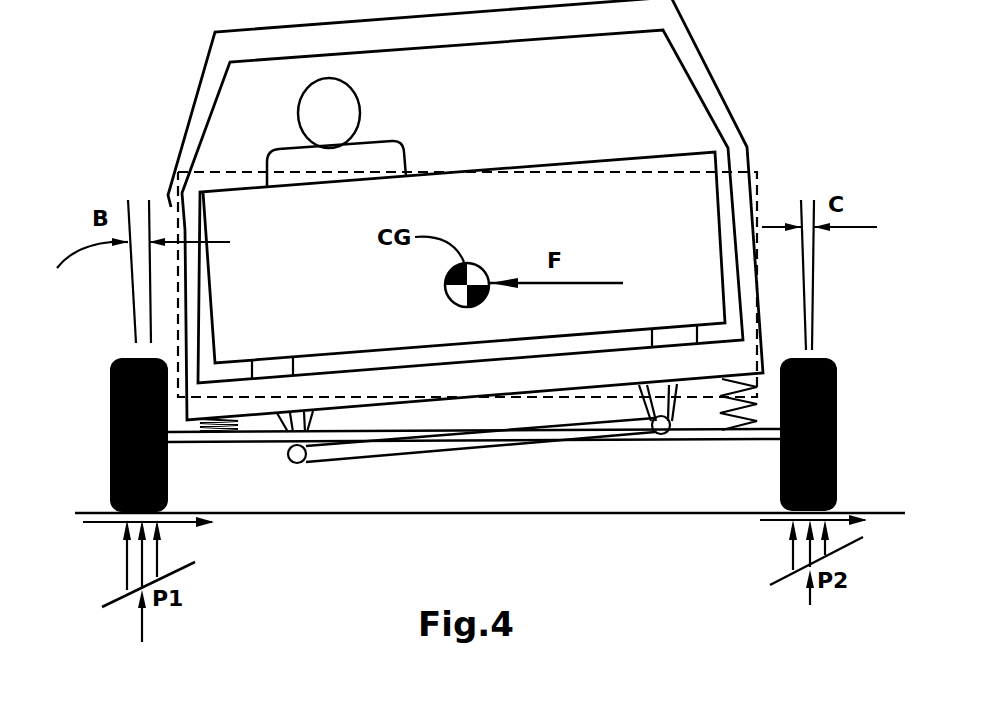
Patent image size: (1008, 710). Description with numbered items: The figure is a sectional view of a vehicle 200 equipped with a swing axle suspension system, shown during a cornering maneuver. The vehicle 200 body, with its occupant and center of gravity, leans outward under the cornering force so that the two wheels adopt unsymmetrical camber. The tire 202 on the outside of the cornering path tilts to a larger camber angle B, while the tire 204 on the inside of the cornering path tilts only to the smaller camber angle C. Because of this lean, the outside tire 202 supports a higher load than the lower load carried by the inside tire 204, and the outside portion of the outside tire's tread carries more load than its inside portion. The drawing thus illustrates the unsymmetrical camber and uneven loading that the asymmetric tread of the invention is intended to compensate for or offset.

The vehicle 200 is at (760, 191).
The tire on the outside of the cornering path 202 is at (100, 399).
The tire on the inside of the cornering path 204 is at (860, 385).